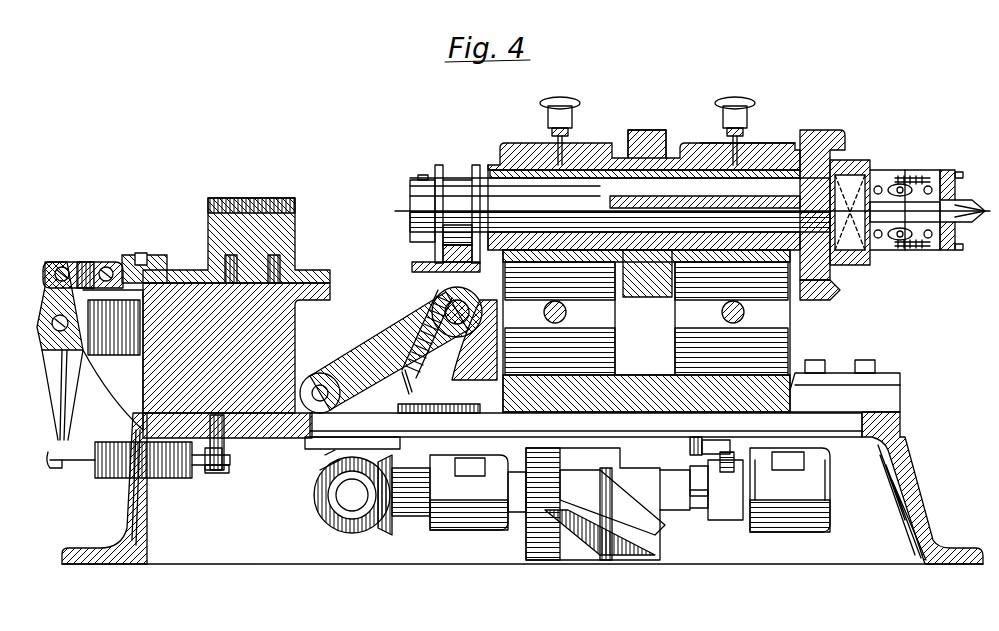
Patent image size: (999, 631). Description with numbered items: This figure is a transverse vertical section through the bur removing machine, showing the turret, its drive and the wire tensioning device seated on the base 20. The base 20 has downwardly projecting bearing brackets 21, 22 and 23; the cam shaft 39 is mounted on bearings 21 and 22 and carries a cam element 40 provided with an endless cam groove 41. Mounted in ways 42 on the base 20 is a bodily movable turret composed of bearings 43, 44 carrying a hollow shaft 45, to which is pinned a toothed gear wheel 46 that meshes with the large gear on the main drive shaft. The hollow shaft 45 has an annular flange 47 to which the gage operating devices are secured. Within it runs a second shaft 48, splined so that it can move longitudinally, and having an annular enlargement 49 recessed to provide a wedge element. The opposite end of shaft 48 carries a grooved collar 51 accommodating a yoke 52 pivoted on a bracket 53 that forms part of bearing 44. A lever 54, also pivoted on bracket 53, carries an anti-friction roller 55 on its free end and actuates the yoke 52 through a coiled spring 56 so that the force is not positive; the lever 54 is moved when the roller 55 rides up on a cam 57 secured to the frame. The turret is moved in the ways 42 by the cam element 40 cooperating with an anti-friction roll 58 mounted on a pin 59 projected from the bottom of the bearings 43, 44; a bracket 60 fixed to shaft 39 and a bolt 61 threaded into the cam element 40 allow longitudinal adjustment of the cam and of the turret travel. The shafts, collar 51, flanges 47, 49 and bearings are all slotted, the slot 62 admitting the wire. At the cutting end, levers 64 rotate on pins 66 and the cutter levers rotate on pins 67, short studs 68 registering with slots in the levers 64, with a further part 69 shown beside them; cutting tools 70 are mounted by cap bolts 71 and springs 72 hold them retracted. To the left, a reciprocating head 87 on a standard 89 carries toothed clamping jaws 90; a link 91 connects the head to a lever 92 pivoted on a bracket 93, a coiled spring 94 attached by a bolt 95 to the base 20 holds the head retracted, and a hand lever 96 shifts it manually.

The base 20 is at (915, 478).
The bearing bracket 21 is at (790, 490).
The bearing bracket 22 is at (452, 495).
The bearing bracket 23 is at (305, 452).
The cam shaft 39 is at (698, 510).
The cam element 40 is at (595, 504).
The endless cam groove 41 is at (648, 545).
The ways 42 is at (845, 386).
The bearing 43 is at (768, 143).
The bearing 44 is at (518, 145).
The hollow shaft 45 is at (682, 142).
The toothed gear wheel 46 is at (636, 130).
The annular flange 47 is at (812, 130).
The second shaft 48 is at (598, 185).
The annular enlargement 49 is at (850, 178).
The grooved collar 51 is at (455, 175).
The yoke 52 is at (420, 276).
The bracket 53 is at (478, 350).
The lever 54 is at (380, 320).
The anti-friction roller 55 is at (318, 375).
The coiled spring 56 is at (420, 318).
The cam 57 is at (438, 404).
The anti-friction roll 58 is at (605, 413).
The pin 59 is at (518, 423).
The bracket 60 is at (725, 486).
The bolt 61 is at (700, 438).
The slot 62 is at (410, 210).
The levers 64 is at (903, 185).
The pins 66 is at (876, 185).
The pins 67 is at (930, 185).
The short studs 68 is at (900, 196).
The jaw screw head 69 is at (918, 203).
The cutting tools 70 is at (985, 195).
The cap bolts 71 is at (958, 175).
The springs 72 is at (915, 178).
The reciprocating head 87 is at (288, 198).
The bracket or standard 89 is at (296, 320).
The clamping jaws 90 is at (240, 205).
The link 91 is at (88, 262).
The lever 92 is at (45, 292).
The bracket 93 is at (105, 356).
The coiled spring 94 is at (110, 470).
The bolt 95 is at (226, 452).
The hand lever 96 is at (158, 255).